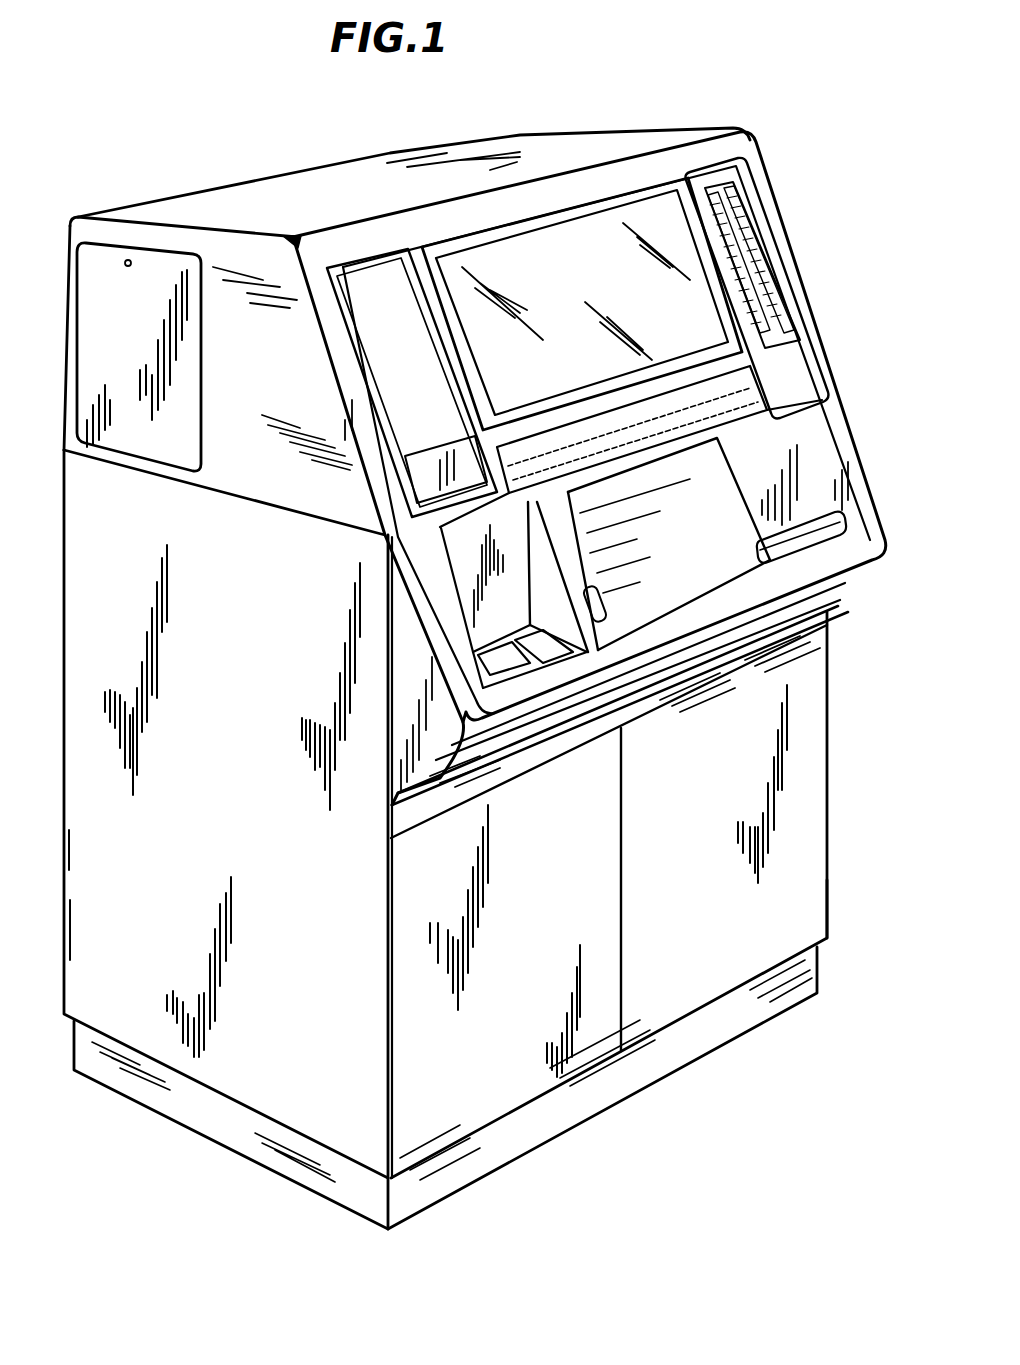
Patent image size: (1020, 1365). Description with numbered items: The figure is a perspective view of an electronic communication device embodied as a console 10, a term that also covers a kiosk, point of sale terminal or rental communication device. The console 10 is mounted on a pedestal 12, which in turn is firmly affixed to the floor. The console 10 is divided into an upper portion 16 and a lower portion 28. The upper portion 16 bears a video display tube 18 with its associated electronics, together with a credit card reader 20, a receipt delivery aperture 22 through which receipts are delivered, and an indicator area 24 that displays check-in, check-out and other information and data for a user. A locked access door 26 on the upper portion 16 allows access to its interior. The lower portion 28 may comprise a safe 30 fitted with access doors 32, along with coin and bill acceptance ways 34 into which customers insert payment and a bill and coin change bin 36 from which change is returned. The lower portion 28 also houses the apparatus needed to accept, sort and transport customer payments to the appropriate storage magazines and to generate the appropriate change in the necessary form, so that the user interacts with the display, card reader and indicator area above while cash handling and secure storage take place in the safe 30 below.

The console 10 is at (197, 165).
The pedestal 12 is at (466, 1182).
The upper portion 16 is at (803, 273).
The video display tube 18 is at (550, 292).
The credit card reader 20 is at (740, 213).
The receipt delivery aperture 22 is at (375, 538).
The indicator area 24 is at (370, 277).
The locked access door 26 is at (140, 342).
The lower portion 28 is at (840, 786).
The safe 30 is at (830, 883).
The access doors 32 is at (572, 900).
The coin and bill acceptance ways 34 is at (604, 590).
The bill and coin change bin 36 is at (817, 553).